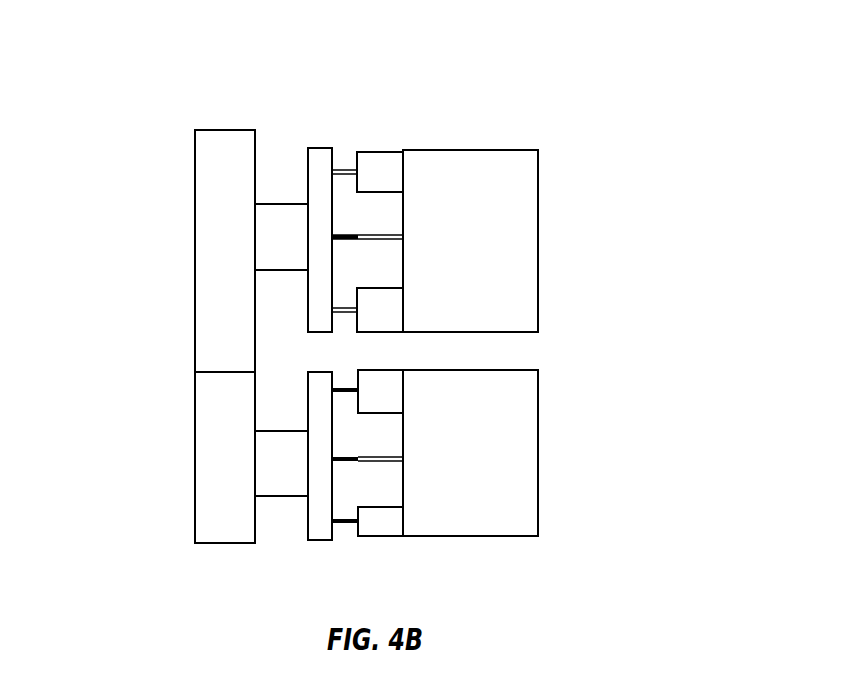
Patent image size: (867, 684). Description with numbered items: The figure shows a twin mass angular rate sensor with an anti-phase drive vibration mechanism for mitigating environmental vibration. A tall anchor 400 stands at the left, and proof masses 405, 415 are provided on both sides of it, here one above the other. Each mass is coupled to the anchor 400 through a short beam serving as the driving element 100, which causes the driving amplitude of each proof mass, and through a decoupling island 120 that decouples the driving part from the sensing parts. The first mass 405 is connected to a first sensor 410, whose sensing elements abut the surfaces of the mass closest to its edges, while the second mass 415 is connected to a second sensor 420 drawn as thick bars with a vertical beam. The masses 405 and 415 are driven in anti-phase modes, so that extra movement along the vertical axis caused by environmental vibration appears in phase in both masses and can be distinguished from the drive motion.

The anchor 400 is at (213, 128).
The driving element 100 is at (265, 243).
The decoupling island 120 is at (316, 147).
The first proof mass 405 is at (512, 148).
The first sensor 410 is at (343, 306).
The second proof mass 415 is at (488, 438).
The second sensor 420 is at (205, 578).